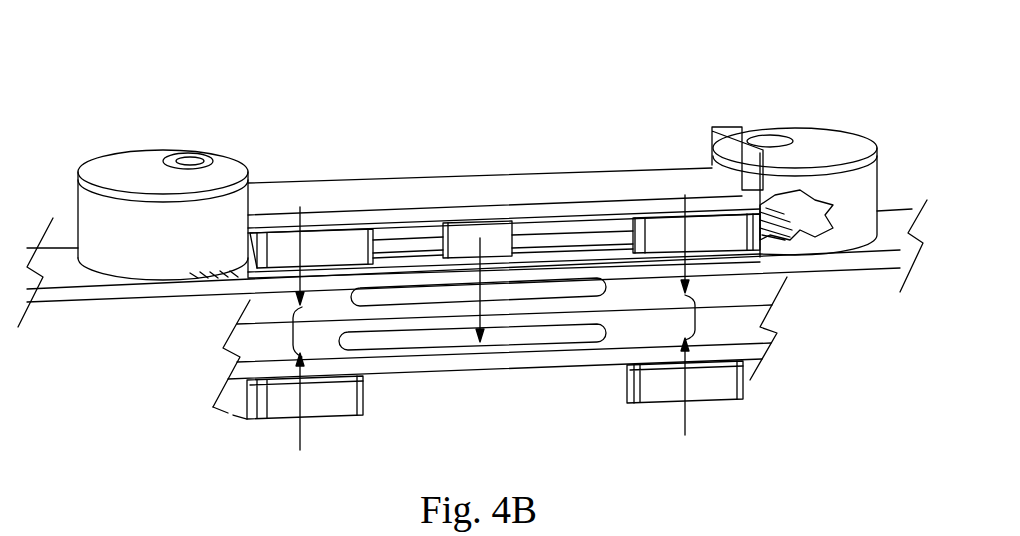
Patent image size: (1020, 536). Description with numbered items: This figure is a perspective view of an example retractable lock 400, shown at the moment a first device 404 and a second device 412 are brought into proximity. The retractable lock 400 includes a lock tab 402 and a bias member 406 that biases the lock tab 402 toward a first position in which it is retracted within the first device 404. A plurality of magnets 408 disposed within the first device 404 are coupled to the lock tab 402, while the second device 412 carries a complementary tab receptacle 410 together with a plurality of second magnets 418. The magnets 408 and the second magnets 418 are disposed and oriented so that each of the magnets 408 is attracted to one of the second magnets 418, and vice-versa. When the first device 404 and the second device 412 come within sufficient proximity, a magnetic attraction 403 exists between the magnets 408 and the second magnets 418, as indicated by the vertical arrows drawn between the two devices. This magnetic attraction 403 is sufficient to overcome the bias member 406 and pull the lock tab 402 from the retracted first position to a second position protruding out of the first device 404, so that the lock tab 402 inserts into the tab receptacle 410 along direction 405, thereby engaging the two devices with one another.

The retractable lock 400 is at (185, 68).
The lock tab 402 is at (593, 288).
The magnetic attraction 403 is at (283, 338).
The first device 404 is at (88, 283).
The direction 405 is at (490, 325).
The bias member 406 is at (813, 240).
The magnets 408 is at (353, 240).
The tab receptacle 410 is at (453, 338).
The second device 412 is at (233, 360).
The second magnets 418 is at (333, 407).